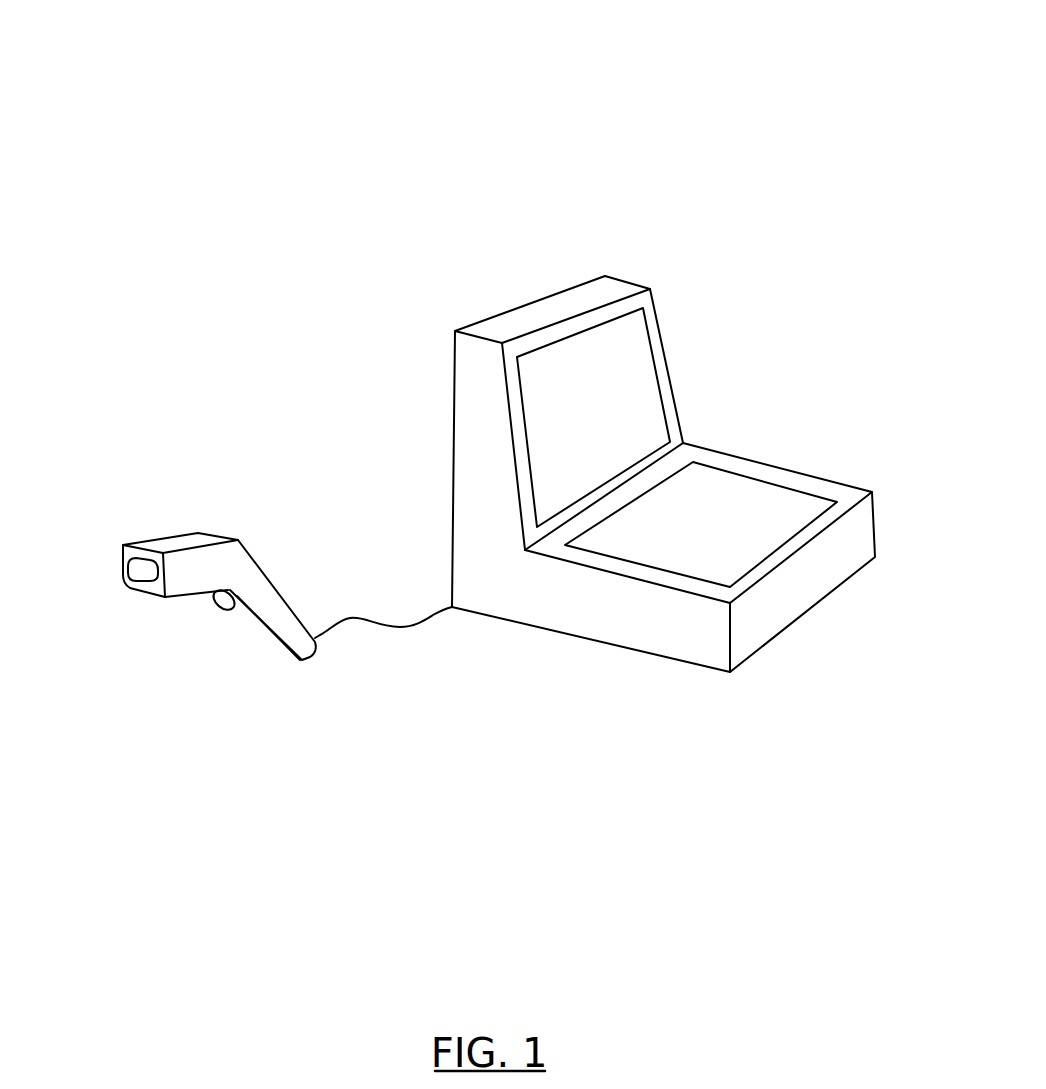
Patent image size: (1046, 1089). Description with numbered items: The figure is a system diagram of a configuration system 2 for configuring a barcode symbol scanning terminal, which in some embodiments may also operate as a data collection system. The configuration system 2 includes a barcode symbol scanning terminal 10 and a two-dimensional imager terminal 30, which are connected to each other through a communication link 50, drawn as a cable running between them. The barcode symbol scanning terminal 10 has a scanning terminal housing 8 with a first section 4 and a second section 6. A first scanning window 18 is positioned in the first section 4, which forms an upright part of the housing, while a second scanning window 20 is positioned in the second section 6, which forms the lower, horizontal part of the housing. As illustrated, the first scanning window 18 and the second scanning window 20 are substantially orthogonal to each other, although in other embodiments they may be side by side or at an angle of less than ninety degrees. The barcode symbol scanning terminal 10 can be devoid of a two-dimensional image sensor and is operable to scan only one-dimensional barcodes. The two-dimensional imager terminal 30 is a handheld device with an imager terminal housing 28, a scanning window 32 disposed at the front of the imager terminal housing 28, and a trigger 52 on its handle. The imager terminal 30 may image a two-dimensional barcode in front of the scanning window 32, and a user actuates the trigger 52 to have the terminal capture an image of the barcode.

The configuration system 2 is at (437, 116).
The barcode symbol scanning terminal 10 is at (560, 225).
The first section 4 is at (653, 297).
The first scanning window 18 is at (622, 365).
The second section 6 is at (850, 493).
The scanning terminal housing 8 is at (590, 625).
The second scanning window 20 is at (717, 537).
The 2D imager terminal 30 is at (182, 512).
The scanning window 32 is at (138, 568).
The imager terminal housing 28 is at (258, 590).
The trigger 52 is at (223, 610).
The communication link 50 is at (398, 627).